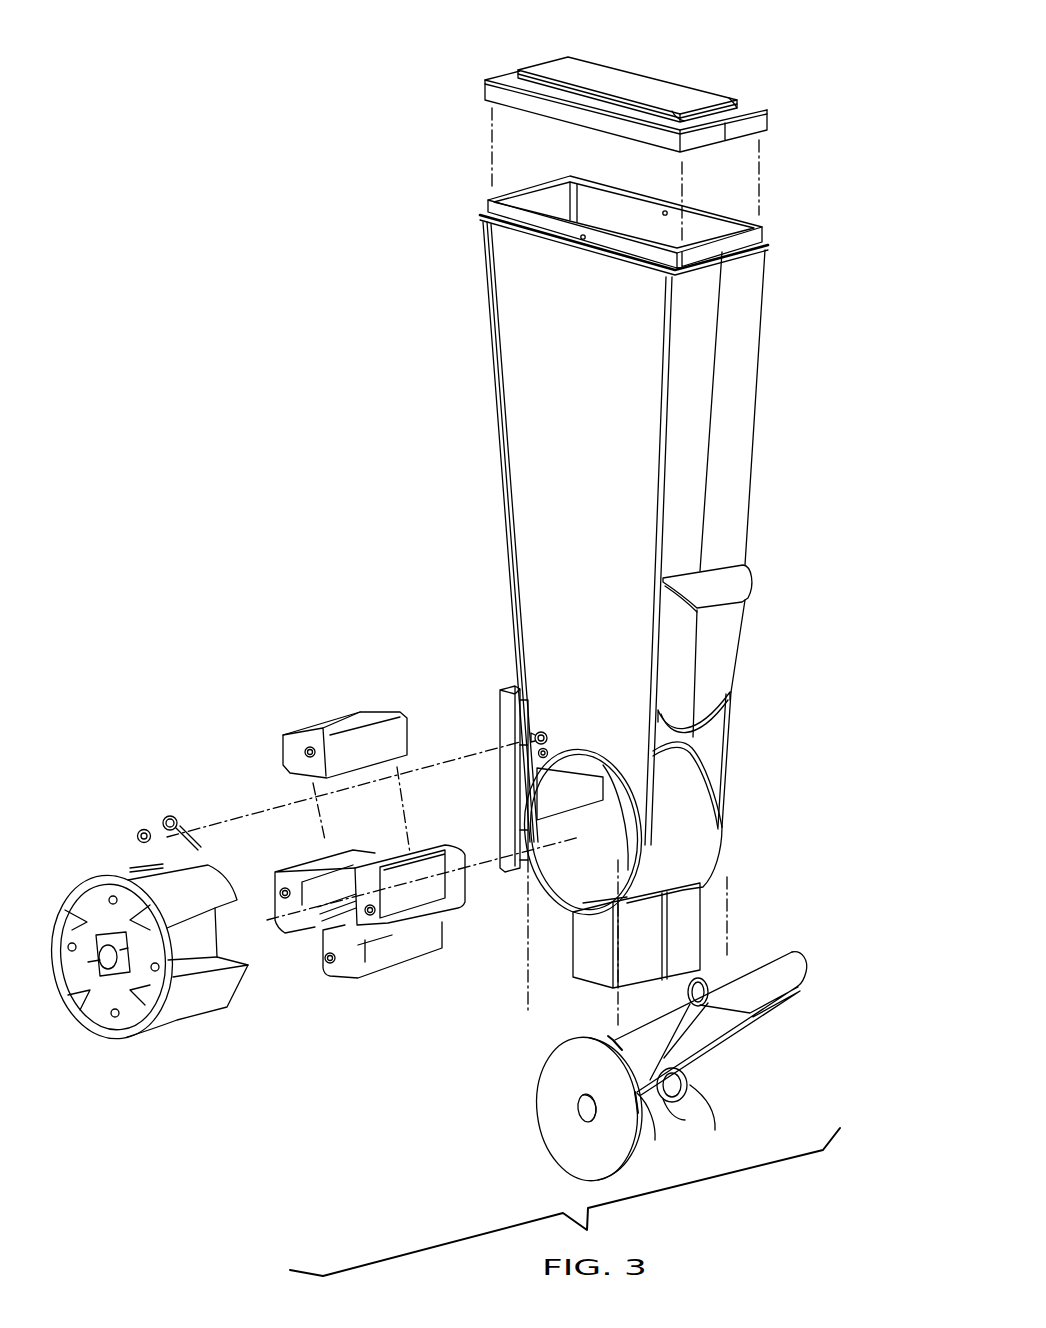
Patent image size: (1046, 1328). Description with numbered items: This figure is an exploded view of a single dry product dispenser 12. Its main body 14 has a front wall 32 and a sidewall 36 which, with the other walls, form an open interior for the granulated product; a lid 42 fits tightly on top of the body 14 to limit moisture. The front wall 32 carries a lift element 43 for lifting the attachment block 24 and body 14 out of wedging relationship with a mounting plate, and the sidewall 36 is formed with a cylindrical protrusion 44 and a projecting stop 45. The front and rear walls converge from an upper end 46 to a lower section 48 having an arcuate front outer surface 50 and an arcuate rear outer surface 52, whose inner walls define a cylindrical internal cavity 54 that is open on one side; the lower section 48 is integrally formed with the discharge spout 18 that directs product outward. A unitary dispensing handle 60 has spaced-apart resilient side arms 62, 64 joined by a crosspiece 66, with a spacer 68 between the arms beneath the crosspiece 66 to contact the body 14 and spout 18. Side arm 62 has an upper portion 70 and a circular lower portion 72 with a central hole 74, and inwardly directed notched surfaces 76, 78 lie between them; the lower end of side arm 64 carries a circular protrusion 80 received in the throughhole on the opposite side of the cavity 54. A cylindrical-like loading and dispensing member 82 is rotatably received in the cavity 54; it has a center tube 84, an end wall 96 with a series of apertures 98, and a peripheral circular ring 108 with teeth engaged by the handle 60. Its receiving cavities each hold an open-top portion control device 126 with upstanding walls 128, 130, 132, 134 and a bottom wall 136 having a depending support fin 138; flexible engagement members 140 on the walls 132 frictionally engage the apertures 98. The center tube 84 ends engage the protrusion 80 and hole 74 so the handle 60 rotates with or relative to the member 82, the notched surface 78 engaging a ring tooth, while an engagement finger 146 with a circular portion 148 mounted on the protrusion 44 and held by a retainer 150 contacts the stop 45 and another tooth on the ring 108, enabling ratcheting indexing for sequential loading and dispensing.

The dispenser 12 is at (780, 183).
The main body 14 is at (764, 424).
The discharge spout 18 is at (685, 930).
The attachment block 24 is at (511, 714).
The front wall 32 is at (722, 465).
The sidewall 36 is at (524, 463).
The lid 42 is at (643, 90).
The lift element 43 is at (744, 586).
The cylindrical protrusion 44 is at (543, 734).
The projecting stop 45 is at (548, 752).
The upper end 46 is at (762, 244).
The lower section 48 is at (748, 839).
The arcuate front outer surface 50 is at (698, 852).
The arcuate rear outer surface 52 is at (514, 833).
The internal cavity 54 is at (585, 862).
The dispensing handle 60 is at (789, 939).
The side arm 62 is at (634, 1021).
The side arm 64 is at (710, 1073).
The crosspiece 66 is at (796, 963).
The spacer 68 is at (737, 1030).
The upper portion 70 is at (663, 1012).
The circular lower portion 72 is at (557, 1107).
The central hole 74 is at (583, 1123).
The notched surface 76 is at (583, 1030).
The notched surface 78 is at (641, 1093).
The circular protrusion 80 is at (690, 1093).
The loading and dispensing member 82 is at (185, 1032).
The center tube 84 is at (130, 933).
The end wall 96 is at (80, 990).
The apertures 98 is at (70, 945).
The peripheral circular ring 108 is at (77, 876).
The portion control device 126 is at (330, 720).
The upstanding wall 128 is at (436, 850).
The upstanding wall 130 is at (427, 944).
The upstanding wall 132 is at (373, 882).
The upstanding wall 134 is at (462, 889).
The bottom wall 136 is at (408, 928).
The support fin 138 is at (332, 902).
The flexible engagement member 140 is at (330, 963).
The engagement finger 146 is at (200, 845).
The circular portion 148 is at (171, 820).
The retainer 150 is at (142, 835).